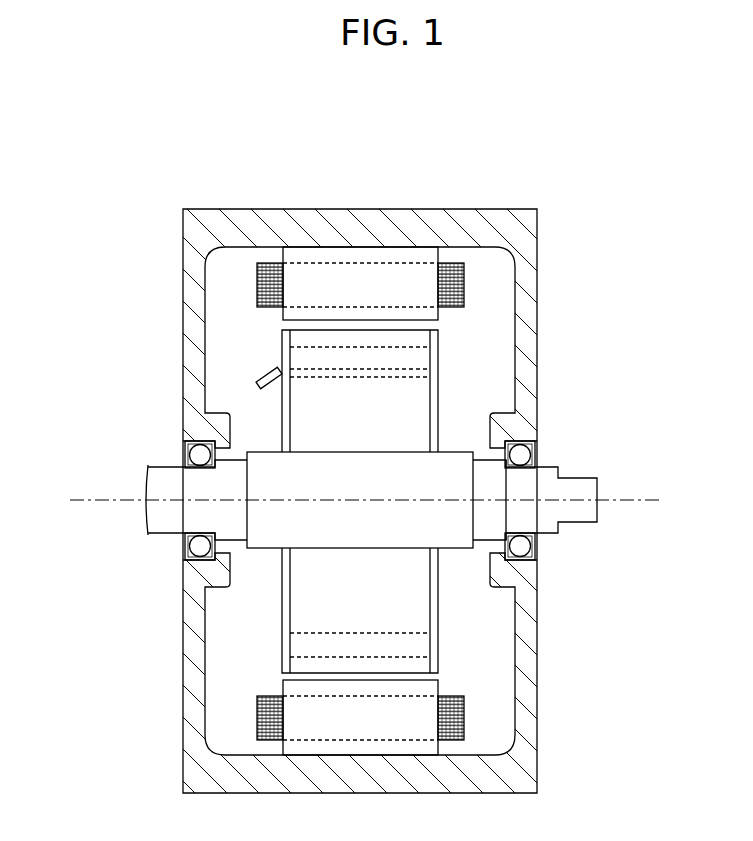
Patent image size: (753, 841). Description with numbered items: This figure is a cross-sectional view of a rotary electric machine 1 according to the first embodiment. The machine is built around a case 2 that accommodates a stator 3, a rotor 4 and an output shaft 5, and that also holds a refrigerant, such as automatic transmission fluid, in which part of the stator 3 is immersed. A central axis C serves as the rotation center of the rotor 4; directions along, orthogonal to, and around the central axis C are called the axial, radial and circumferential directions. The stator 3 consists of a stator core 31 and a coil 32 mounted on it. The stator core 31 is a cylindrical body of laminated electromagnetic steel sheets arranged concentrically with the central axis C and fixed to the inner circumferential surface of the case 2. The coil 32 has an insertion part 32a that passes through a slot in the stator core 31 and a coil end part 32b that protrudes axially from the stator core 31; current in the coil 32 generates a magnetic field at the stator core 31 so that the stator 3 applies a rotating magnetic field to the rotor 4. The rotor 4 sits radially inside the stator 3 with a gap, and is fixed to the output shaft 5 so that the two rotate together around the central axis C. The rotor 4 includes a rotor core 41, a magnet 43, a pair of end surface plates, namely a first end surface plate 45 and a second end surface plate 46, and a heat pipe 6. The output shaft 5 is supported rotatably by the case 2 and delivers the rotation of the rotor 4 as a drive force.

The rotary electric machine 1 is at (558, 157).
The case 2 is at (494, 209).
The stator 3 is at (304, 244).
The stator core 31 is at (389, 257).
The coil 32 is at (257, 270).
The insertion part 32a is at (413, 257).
The coil end part 32b is at (257, 292).
The rotor 4 is at (443, 624).
The rotor core 41 is at (415, 408).
The magnet 43 is at (423, 355).
The first end surface plate 45 is at (283, 615).
The second end surface plate 46 is at (437, 648).
The output shaft 5 is at (575, 518).
The heat pipe 6 is at (266, 375).
The central axis C is at (95, 499).